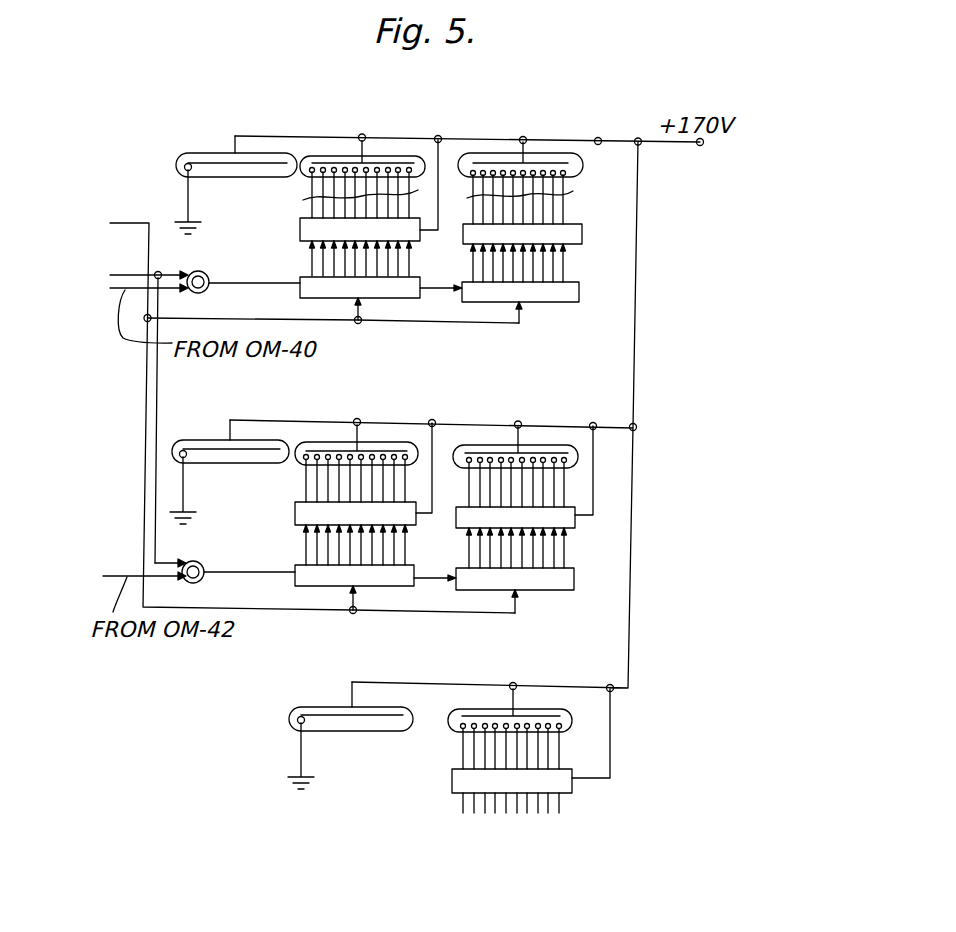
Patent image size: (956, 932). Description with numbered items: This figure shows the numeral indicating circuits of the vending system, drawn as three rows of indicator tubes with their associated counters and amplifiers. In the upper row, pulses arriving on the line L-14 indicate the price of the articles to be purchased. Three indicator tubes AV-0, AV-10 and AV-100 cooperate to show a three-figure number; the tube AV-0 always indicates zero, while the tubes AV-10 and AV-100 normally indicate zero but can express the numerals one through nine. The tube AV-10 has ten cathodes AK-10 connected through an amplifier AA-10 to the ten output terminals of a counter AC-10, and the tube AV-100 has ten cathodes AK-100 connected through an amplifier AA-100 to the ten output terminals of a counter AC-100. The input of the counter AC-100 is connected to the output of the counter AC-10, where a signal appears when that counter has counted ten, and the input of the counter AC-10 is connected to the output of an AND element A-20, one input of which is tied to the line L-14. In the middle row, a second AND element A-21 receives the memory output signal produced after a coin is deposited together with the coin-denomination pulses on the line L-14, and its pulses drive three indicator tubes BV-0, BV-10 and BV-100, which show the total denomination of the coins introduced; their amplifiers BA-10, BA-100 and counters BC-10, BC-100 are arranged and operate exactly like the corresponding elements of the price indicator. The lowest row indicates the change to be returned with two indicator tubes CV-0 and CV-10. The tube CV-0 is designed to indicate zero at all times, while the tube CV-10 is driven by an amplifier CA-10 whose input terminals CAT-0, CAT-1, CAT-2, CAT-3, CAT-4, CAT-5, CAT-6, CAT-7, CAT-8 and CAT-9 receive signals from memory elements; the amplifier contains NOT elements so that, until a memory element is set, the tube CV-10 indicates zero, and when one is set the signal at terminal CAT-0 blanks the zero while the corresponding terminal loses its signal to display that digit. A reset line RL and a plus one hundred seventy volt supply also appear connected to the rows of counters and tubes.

The reset line RL is at (143, 222).
The line L-14 is at (121, 274).
The indicator tube AV-0 is at (200, 153).
The indicator tube AV-10 is at (333, 156).
The indicator tube AV-100 is at (492, 155).
The cathodes AK-10 is at (352, 203).
The cathodes AK-100 is at (522, 204).
The amplifier AA-10 is at (303, 230).
The amplifier AA-100 is at (583, 242).
The counter AC-10 is at (400, 290).
The counter AC-100 is at (557, 302).
The AND element A-20 is at (209, 290).
The AND element A-21 is at (207, 567).
The indicator tube BV-0 is at (193, 440).
The indicator tube BV-10 is at (372, 442).
The indicator tube BV-100 is at (487, 445).
The amplifier BA-10 is at (303, 513).
The amplifier BA-100 is at (577, 522).
The counter BC-10 is at (312, 586).
The counter BC-100 is at (555, 590).
The indicator tube CV-0 is at (304, 707).
The indicator tube CV-10 is at (473, 709).
The amplifier CA-10 is at (566, 787).
The input terminal CAT-0 is at (463, 812).
The input terminal CAT-1 is at (474, 812).
The input terminal CAT-2 is at (485, 812).
The input terminal CAT-3 is at (495, 812).
The input terminal CAT-4 is at (506, 812).
The input terminal CAT-5 is at (517, 812).
The input terminal CAT-6 is at (527, 812).
The input terminal CAT-7 is at (538, 812).
The input terminal CAT-8 is at (548, 812).
The input terminal CAT-9 is at (559, 813).